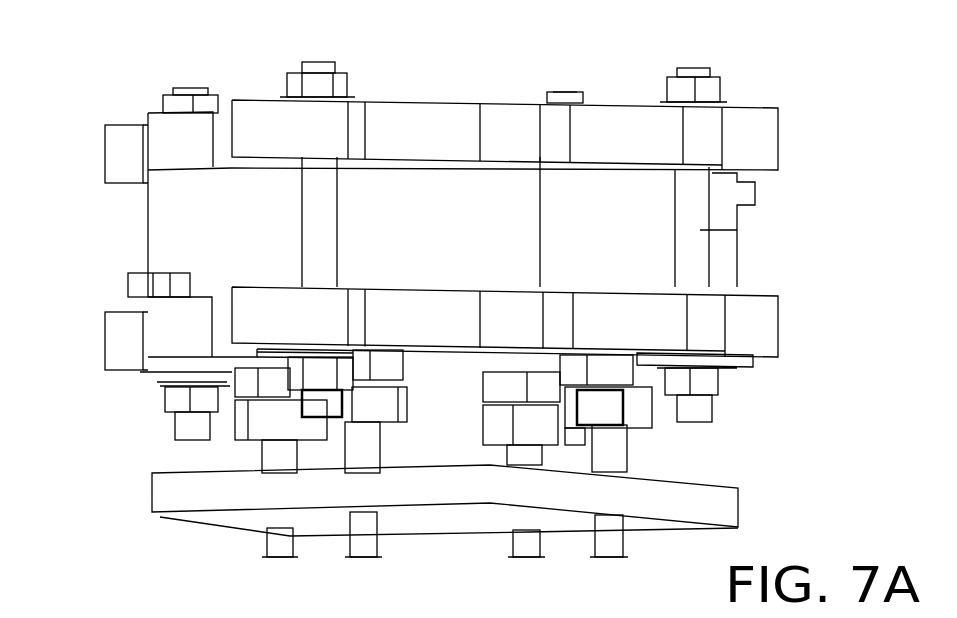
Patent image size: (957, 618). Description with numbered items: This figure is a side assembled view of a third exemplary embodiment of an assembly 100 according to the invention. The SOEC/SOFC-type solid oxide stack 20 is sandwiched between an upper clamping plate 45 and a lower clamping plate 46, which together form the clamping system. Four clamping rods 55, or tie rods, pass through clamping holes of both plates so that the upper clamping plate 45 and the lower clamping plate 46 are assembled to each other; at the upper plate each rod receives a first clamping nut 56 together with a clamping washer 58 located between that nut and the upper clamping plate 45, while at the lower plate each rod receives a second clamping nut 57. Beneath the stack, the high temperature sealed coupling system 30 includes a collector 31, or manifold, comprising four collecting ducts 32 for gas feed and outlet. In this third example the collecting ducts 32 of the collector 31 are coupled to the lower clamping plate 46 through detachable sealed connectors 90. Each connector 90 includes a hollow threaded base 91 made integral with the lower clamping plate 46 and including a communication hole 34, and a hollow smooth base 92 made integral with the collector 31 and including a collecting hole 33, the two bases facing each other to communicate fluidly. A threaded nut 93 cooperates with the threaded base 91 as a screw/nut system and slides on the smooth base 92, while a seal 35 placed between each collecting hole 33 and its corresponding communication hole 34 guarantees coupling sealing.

The assembly 100 is at (756, 75).
The SOEC/SOFC-type solid oxide stack 20 is at (165, 205).
The upper clamping plate 45 is at (123, 143).
The lower clamping plate 46 is at (130, 326).
The clamping rod 55 is at (310, 196).
The first clamping nut 56 is at (293, 78).
The threaded base 91 is at (613, 347).
The clamping washer 58 is at (153, 367).
The second clamping nut 57 is at (172, 398).
The communication hole 34 is at (200, 413).
The threaded nut 93 is at (640, 405).
The collecting hole 33 is at (375, 375).
The detachable sealed connector 90 is at (474, 410).
The smooth base 92 is at (612, 462).
The high temperature sealed coupling system 30 is at (118, 494).
The collector 31 is at (185, 498).
The seal 35 is at (373, 457).
The collecting duct 32 is at (363, 552).